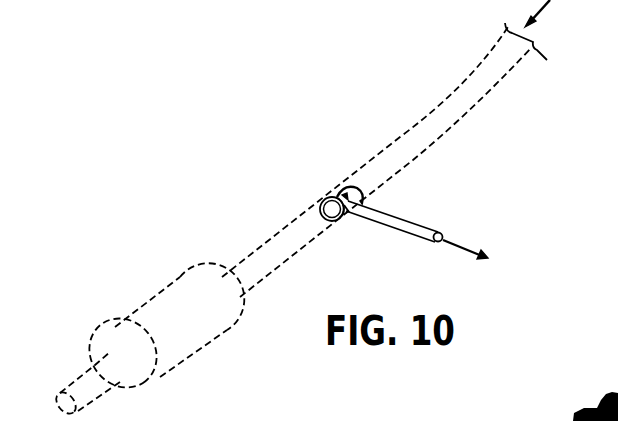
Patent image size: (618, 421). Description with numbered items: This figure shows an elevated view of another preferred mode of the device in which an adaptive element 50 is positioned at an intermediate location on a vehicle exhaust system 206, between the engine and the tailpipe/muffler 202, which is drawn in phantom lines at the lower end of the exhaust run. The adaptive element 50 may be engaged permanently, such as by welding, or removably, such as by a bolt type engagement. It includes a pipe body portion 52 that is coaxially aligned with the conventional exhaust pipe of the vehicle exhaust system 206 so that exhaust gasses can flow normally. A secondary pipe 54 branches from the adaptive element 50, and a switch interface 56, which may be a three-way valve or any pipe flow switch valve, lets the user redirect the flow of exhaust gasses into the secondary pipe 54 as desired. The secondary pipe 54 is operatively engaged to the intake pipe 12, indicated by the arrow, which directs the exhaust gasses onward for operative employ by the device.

The intake pipe 12 is at (491, 261).
The adaptive element 50 is at (322, 203).
The pipe body portion 52 is at (330, 196).
The secondary pipe 54 is at (404, 218).
The switch interface 56 is at (347, 216).
The tailpipe/muffler 202 is at (85, 373).
The vehicle exhaust system 206 is at (432, 115).